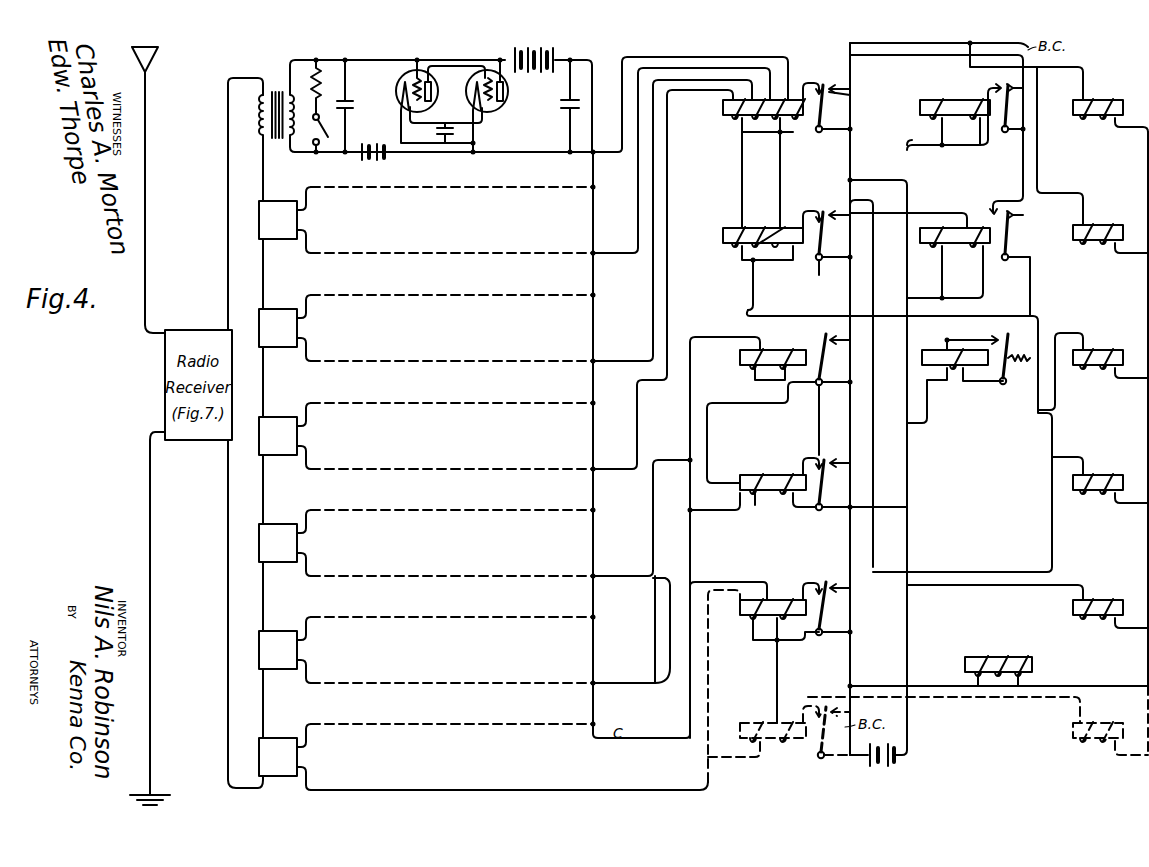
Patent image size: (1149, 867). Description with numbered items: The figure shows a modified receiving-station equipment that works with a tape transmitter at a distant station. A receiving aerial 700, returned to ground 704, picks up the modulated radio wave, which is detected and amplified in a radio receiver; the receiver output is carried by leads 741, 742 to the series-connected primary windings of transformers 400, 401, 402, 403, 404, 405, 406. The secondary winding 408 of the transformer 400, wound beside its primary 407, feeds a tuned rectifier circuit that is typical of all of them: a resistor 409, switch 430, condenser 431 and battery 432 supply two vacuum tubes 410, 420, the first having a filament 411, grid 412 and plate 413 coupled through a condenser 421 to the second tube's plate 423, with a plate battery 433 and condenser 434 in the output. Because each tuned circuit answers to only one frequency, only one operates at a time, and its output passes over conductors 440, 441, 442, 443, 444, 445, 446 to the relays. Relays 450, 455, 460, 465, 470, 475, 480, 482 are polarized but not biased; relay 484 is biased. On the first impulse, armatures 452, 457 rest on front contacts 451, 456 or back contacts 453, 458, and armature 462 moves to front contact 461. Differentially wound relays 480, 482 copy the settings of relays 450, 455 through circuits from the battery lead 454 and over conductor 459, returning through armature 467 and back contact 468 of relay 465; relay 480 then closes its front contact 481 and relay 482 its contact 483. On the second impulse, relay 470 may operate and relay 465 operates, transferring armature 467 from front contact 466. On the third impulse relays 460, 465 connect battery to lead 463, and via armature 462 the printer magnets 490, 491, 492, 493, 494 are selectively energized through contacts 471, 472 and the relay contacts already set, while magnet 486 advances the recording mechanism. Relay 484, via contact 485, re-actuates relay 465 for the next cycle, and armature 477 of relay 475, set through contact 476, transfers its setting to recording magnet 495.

The receiving aerial 700 is at (160, 60).
The ground connection 704 is at (150, 640).
The lead 741 is at (226, 190).
The lead 742 is at (226, 528).
The transformer 400 is at (254, 130).
The primary winding 407 is at (258, 113).
The secondary winding 408 is at (283, 140).
The transformer 401 is at (426, 220).
The transformer 402 is at (426, 328).
The transformer 403 is at (426, 436).
The transformer 404 is at (426, 543).
The transformer 405 is at (426, 650).
The transformer 406 is at (426, 757).
The resistor 409 is at (320, 68).
The switch 430 is at (316, 150).
The condenser 431 is at (353, 106).
The battery 432 is at (372, 163).
The vacuum tube 410 is at (425, 89).
The filament 411 is at (403, 90).
The grid 412 is at (420, 78).
The plate 413 is at (432, 90).
The vacuum tube 420 is at (509, 101).
The condenser 421 is at (476, 104).
The plate 423 is at (504, 90).
The battery 433 is at (560, 52).
The condenser 434 is at (580, 98).
The conductor 440 is at (714, 57).
The conductor 441 is at (625, 250).
The conductor 442 is at (636, 358).
The conductor 443 is at (622, 466).
The conductor 444 is at (624, 574).
The conductor 445 is at (640, 681).
The conductor 446 is at (535, 690).
The relay 450 is at (722, 105).
The front contact 451 is at (808, 92).
The armature 452 is at (840, 85).
The back contact 453 is at (836, 96).
The battery conductor 454 is at (998, 55).
The relay 455 is at (722, 233).
The front contact 456 is at (808, 208).
The armature 457 is at (816, 262).
The back contact 458 is at (823, 218).
The conductor 459 is at (900, 213).
The relay 460 is at (740, 357).
The front contact 461 is at (815, 338).
The armature 462 is at (790, 384).
The lead 463 is at (899, 435).
The relay 465 is at (738, 508).
The front contact 466 is at (800, 460).
The armature 467 is at (828, 490).
The back contact 468 is at (823, 470).
The relay 470 is at (742, 618).
The contact 471 is at (804, 582).
The contact 472 is at (826, 578).
The relay 475 is at (742, 740).
The relay armature 476 is at (812, 706).
The armature 477 is at (821, 758).
The relay 480 is at (945, 98).
The front contact 481 is at (991, 128).
The relay 482 is at (958, 218).
The relay armature 483 is at (1005, 210).
The relay 484 is at (936, 368).
The contact 485 is at (1010, 325).
The magnet 486 is at (990, 660).
The printer magnet 490 is at (1082, 118).
The printer magnet 491 is at (1082, 243).
The printer magnet 492 is at (1116, 350).
The printer magnet 493 is at (1081, 493).
The printer magnet 494 is at (1082, 618).
The recording magnet 495 is at (1082, 741).